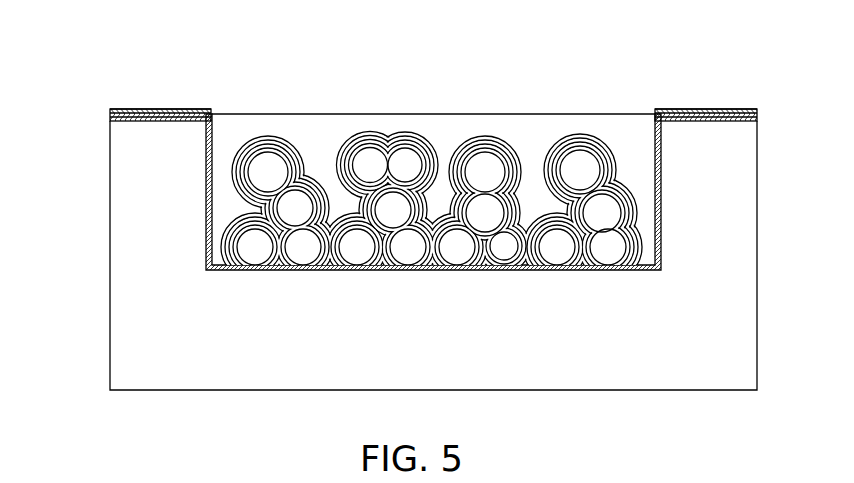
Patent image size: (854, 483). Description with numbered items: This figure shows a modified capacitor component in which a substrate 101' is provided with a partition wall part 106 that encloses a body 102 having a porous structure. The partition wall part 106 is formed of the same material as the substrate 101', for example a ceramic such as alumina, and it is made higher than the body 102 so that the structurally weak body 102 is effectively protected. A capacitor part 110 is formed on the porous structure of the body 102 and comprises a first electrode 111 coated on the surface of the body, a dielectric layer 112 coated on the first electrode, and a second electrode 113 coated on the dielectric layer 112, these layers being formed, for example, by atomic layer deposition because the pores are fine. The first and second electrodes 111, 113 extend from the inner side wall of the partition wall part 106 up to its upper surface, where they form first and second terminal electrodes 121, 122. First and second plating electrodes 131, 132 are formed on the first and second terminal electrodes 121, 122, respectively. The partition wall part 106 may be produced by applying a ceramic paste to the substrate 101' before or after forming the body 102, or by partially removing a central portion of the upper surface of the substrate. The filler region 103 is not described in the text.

The substrate 101' is at (390, 255).
The body 102 is at (266, 160).
The filler (encapsulant) in cavity 103 is at (438, 117).
The partition wall part 106 is at (128, 192).
The capacitor part 110 is at (645, 47).
The first electrode 111 is at (606, 143).
The dielectric layer 112 is at (580, 135).
The second electrode 113 is at (553, 153).
The first terminal electrode 121 is at (110, 115).
The second terminal electrode 122 is at (757, 115).
The first plating electrode 131 is at (137, 108).
The second plating electrode 132 is at (710, 108).